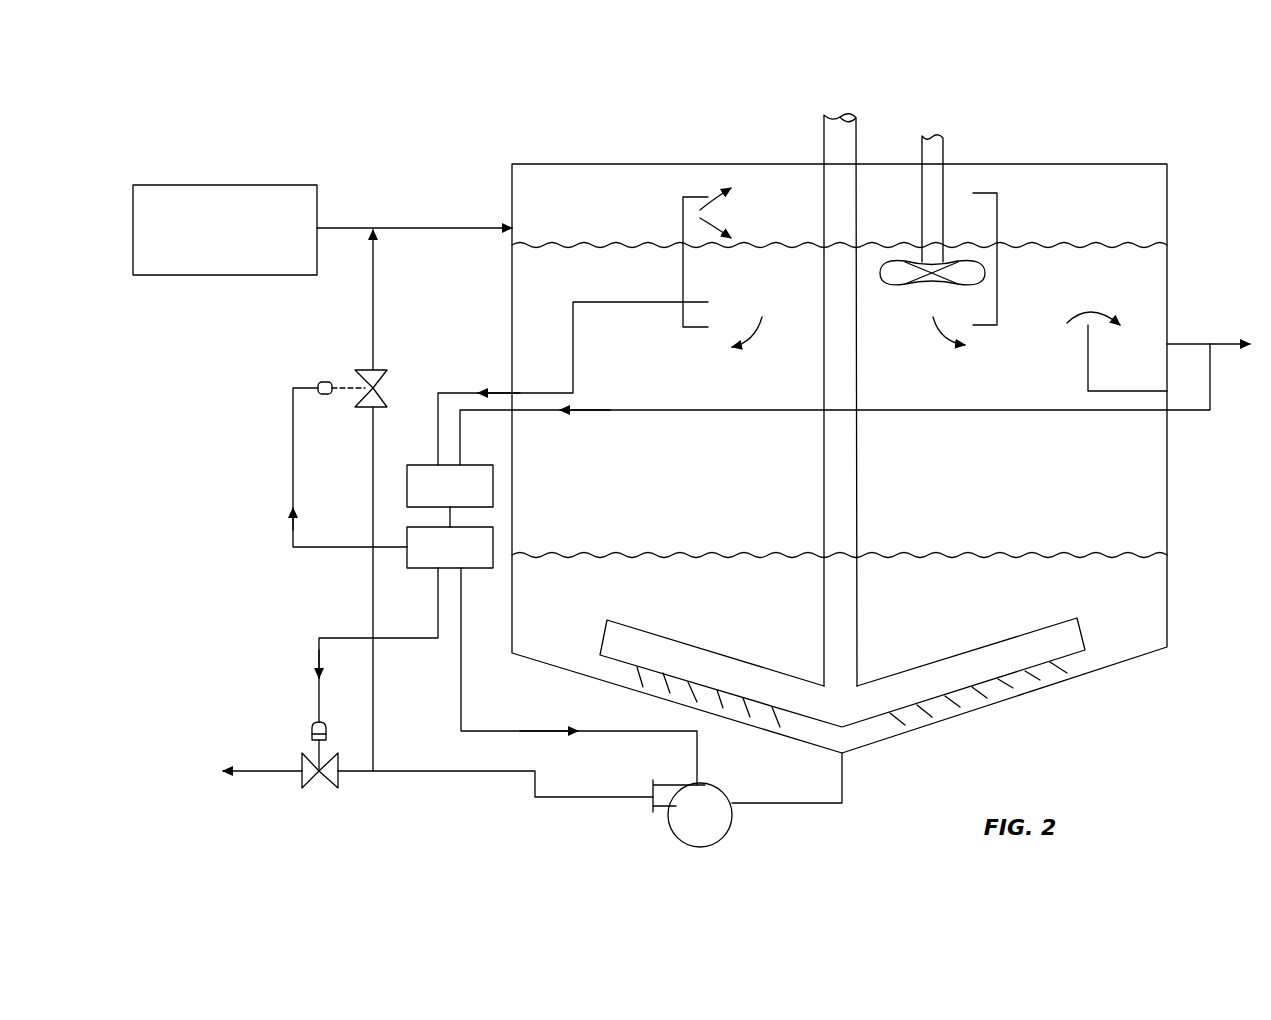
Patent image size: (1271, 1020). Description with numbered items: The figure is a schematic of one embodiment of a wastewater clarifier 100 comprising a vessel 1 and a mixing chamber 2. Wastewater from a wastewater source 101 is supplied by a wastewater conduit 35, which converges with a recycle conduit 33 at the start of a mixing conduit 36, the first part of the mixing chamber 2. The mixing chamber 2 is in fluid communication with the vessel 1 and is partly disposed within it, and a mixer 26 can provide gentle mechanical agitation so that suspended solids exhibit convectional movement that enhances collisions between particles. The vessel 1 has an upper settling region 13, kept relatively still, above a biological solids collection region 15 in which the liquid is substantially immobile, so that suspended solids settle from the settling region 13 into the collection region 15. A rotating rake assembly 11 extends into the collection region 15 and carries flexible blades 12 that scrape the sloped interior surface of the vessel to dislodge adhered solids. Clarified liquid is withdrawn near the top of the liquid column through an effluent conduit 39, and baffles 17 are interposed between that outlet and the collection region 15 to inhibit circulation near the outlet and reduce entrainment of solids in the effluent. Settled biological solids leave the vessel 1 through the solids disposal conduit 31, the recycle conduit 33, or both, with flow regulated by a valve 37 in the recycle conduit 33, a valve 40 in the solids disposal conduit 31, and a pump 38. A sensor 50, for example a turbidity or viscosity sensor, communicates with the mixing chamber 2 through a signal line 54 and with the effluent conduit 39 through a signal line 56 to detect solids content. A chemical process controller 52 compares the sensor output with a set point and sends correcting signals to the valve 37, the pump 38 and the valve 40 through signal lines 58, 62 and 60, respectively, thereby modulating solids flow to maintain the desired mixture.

The wastewater clarifier 100 is at (1095, 103).
The vessel 1 is at (999, 269).
The mixing chamber 2 is at (754, 305).
The rotating rake assembly 11 is at (843, 103).
The flexible blades 12 is at (612, 668).
The settling region 13 is at (839, 526).
The biological solids collection region 15 is at (1060, 584).
The baffles 17 is at (1088, 360).
The mixer 26 is at (932, 128).
The solids disposal conduit 31 is at (263, 770).
The recycle conduit 33 is at (373, 323).
The wastewater conduit 35 is at (347, 227).
The mixing conduit 36 is at (612, 227).
The valve 37 is at (374, 370).
The pump 38 is at (672, 833).
The effluent conduit 39 is at (1190, 344).
The valve 40 is at (315, 787).
The sensor 50 is at (450, 496).
The chemical process controller 52 is at (450, 547).
The signal line 54 is at (575, 340).
The signal line 56 is at (660, 415).
The signal line 58 is at (293, 468).
The signal line 60 is at (345, 638).
The signal line 62 is at (462, 702).
The wastewater source 101 is at (225, 230).